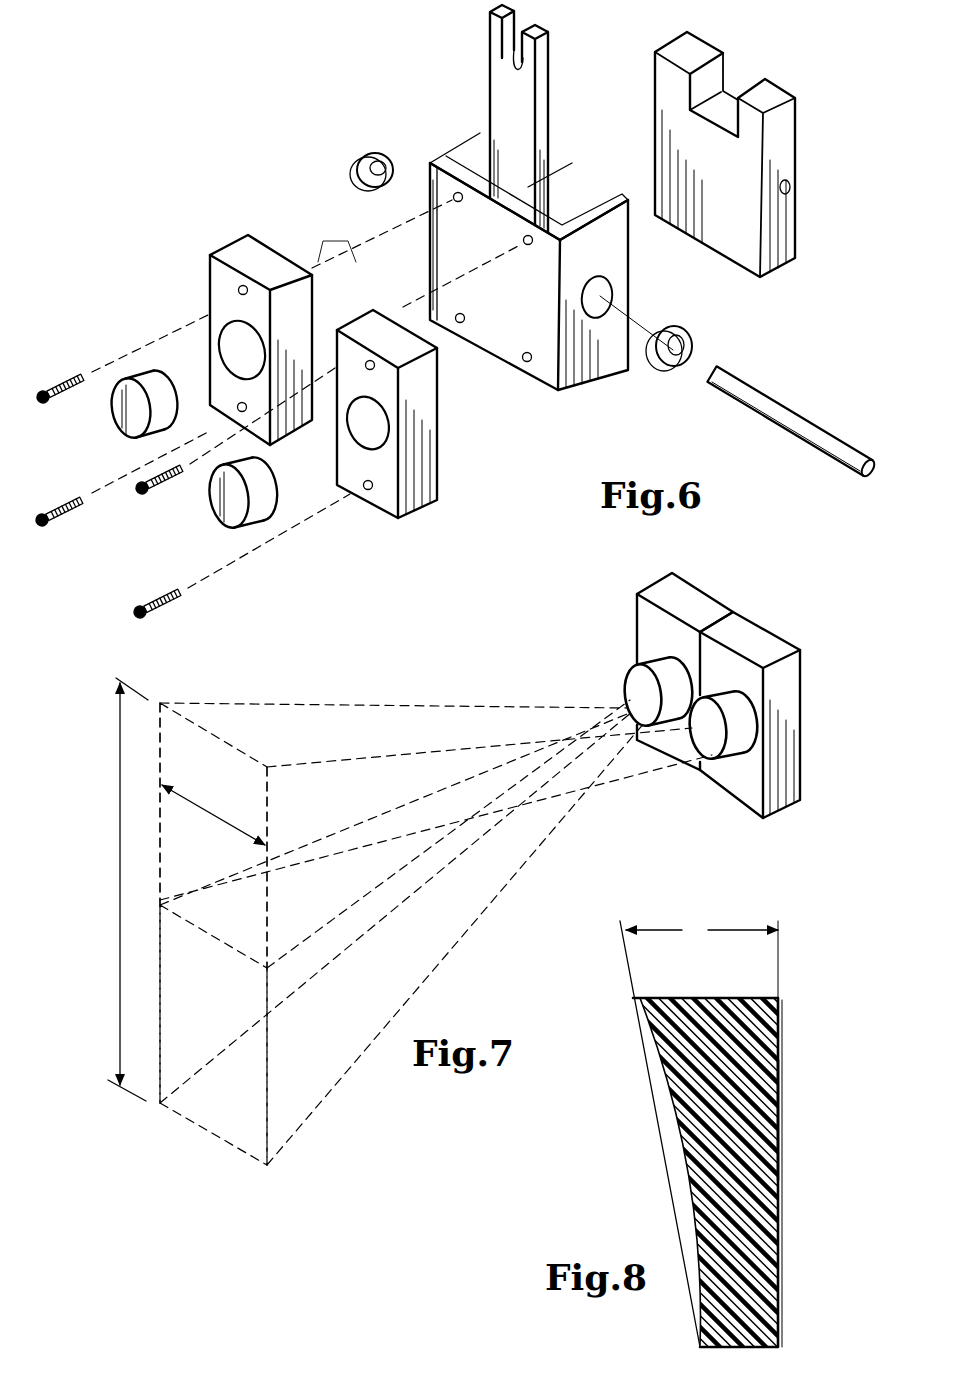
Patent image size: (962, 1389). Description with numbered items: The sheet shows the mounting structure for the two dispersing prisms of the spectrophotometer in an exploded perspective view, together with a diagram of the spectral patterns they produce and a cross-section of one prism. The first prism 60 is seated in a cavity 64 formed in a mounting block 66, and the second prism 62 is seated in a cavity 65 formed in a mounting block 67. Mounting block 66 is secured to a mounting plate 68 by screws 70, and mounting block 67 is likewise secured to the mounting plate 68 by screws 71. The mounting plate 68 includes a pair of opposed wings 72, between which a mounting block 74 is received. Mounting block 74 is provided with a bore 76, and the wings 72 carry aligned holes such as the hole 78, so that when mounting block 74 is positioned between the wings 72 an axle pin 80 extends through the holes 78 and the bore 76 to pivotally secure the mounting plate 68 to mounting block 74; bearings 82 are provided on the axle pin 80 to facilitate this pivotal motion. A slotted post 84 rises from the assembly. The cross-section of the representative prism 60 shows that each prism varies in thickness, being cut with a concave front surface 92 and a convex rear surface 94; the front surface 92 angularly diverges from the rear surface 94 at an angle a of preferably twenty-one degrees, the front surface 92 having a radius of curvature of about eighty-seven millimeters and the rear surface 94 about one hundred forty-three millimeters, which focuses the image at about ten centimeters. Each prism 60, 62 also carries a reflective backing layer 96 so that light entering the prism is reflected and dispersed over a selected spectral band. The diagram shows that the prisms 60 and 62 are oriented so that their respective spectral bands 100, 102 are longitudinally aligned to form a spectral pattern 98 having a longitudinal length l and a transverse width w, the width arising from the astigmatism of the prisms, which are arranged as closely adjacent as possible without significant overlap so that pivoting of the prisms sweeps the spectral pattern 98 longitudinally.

In FIG. 6, the first prism 60 is at (143, 378).
In FIG. 7, the first prism 60 is at (634, 672).
In FIG. 8, the first prism 60 is at (767, 1200).
In FIG. 6, the second prism 62 is at (276, 510).
In FIG. 7, the second prism 62 is at (740, 722).
In FIG. 6, the cavity 64 is at (225, 347).
In FIG. 6, the cavity 65 is at (373, 452).
In FIG. 6, the mounting block 66 is at (213, 275).
In FIG. 7, the mounting block 66 is at (690, 600).
In FIG. 6, the mounting block 67 is at (425, 502).
In FIG. 7, the mounting block 67 is at (780, 690).
In FIG. 6, the mounting plate 68 is at (512, 367).
In FIG. 6, the screws 70 is at (70, 392).
In FIG. 6, the screws 71 is at (170, 482).
In FIG. 6, the wings 72 is at (472, 163).
In FIG. 6, the mounting block 74 is at (730, 248).
In FIG. 6, the bore 76 is at (792, 190).
In FIG. 6, the hole 78 is at (616, 297).
In FIG. 6, the axle pin 80 is at (773, 422).
In FIG. 6, the bearings 82 is at (352, 168).
In FIG. 6, the slotted post 84 is at (519, 108).
In FIG. 8, the front surface 92 is at (665, 1122).
In FIG. 8, the rear surface 94 is at (782, 1058).
In FIG. 8, the reflective backing layer 96 is at (780, 1118).
In FIG. 7, the spectral pattern 98 is at (150, 835).
In FIG. 7, the spectral band 100 is at (203, 748).
In FIG. 7, the spectral band 102 is at (200, 1120).